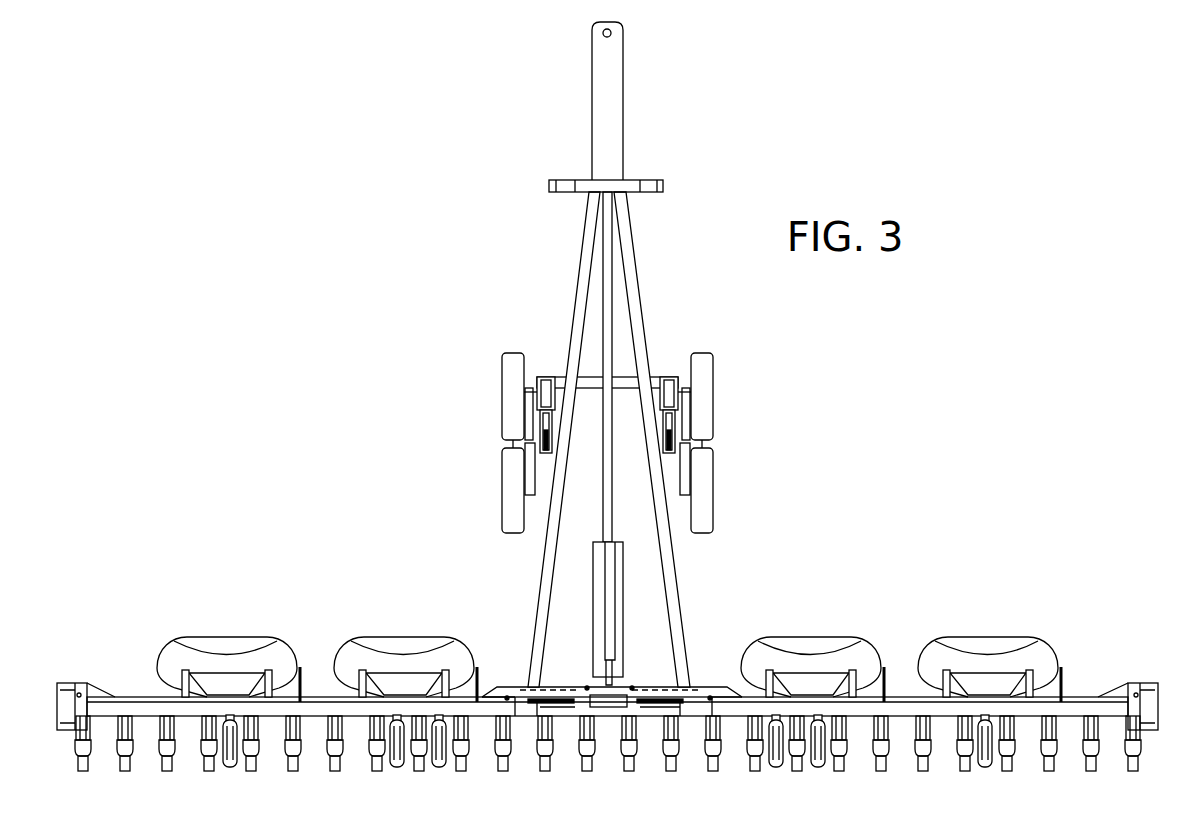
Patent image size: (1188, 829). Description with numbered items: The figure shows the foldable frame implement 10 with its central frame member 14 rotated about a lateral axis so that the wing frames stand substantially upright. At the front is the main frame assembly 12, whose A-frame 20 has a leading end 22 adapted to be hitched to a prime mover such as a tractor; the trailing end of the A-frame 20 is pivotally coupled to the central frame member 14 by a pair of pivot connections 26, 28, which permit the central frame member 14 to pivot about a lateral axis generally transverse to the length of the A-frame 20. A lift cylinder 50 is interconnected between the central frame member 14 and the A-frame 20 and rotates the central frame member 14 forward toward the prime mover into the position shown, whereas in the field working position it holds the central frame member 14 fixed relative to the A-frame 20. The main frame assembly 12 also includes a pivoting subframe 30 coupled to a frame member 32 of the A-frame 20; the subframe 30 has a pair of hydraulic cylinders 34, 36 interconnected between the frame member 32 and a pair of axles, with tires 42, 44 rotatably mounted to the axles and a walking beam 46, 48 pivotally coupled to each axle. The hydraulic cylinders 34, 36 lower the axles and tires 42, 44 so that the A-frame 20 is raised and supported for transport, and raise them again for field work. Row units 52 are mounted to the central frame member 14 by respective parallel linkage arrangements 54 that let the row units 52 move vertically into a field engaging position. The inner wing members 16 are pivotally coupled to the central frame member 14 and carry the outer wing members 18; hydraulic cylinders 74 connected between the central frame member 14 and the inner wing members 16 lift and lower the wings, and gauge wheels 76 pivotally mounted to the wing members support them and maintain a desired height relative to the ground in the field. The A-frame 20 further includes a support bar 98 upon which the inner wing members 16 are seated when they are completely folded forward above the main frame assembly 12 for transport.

The foldable frame implement 10 is at (320, 208).
The main frame assembly 12 is at (567, 100).
The central frame member 14 is at (564, 760).
The inner wing members 16 is at (578, 611).
The outer wing members 18 is at (137, 645).
The A-frame 20 is at (628, 258).
The leading end 22 is at (613, 35).
The pivot connection 26 is at (522, 703).
The pivot connection 28 is at (693, 703).
The pivoting subframe 30 is at (606, 413).
The frame member 32 is at (625, 390).
The hydraulic cylinder 34 is at (541, 376).
The hydraulic cylinder 36 is at (670, 398).
The tires 42 is at (507, 388).
The tires 44 is at (707, 392).
The walking beam 46 is at (527, 472).
The walking beam 48 is at (683, 470).
The lift cylinder 50 is at (610, 615).
The row units 52 is at (298, 770).
The parallel linkage arrangements 54 is at (157, 732).
The hydraulic cylinders 74 is at (560, 697).
The gauge wheels 76 is at (230, 768).
The support bar 98 is at (631, 180).